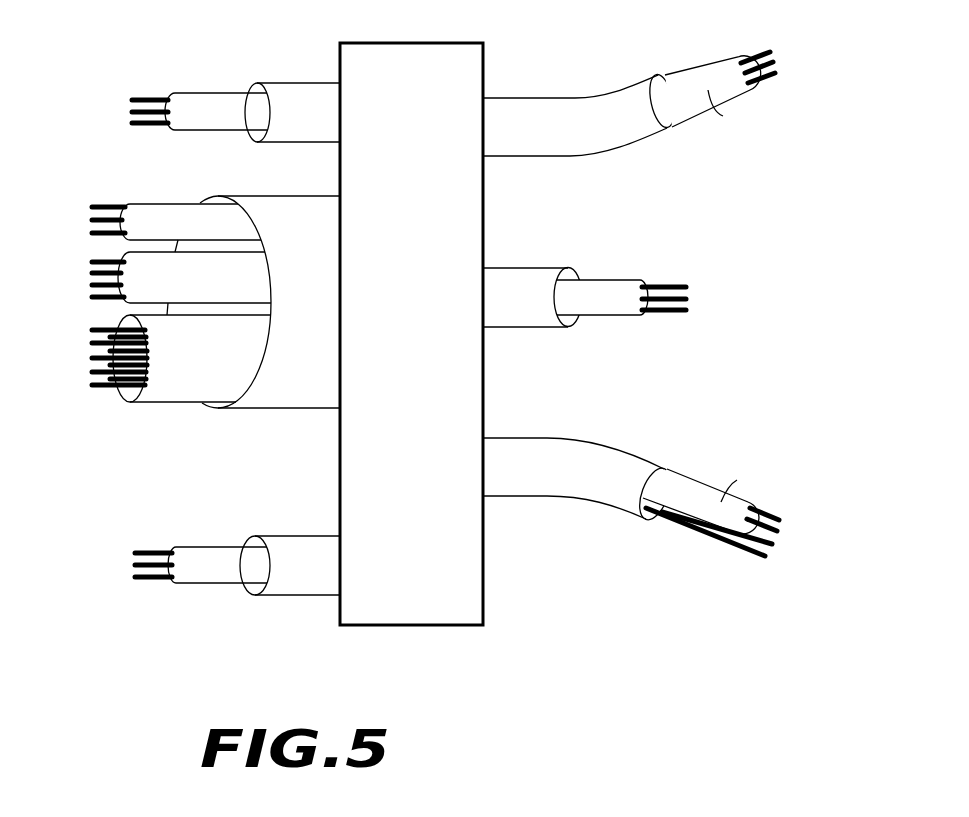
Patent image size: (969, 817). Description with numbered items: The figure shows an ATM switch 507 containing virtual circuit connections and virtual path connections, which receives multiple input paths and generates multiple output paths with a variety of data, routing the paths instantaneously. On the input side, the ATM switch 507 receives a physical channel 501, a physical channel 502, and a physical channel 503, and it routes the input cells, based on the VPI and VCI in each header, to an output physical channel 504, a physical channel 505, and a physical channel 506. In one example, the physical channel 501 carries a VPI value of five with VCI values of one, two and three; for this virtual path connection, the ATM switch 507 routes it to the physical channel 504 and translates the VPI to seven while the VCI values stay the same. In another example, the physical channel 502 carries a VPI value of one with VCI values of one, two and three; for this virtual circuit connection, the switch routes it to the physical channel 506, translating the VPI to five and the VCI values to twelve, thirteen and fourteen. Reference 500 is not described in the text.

The ATM network system 500 is at (443, 359).
The physical channel 501 is at (324, 126).
The physical channel 502 is at (323, 267).
The physical channel 503 is at (323, 579).
The physical channel 504 is at (543, 142).
The physical channel 505 is at (536, 309).
The physical channel 506 is at (543, 477).
The ATM switch 507 is at (458, 381).